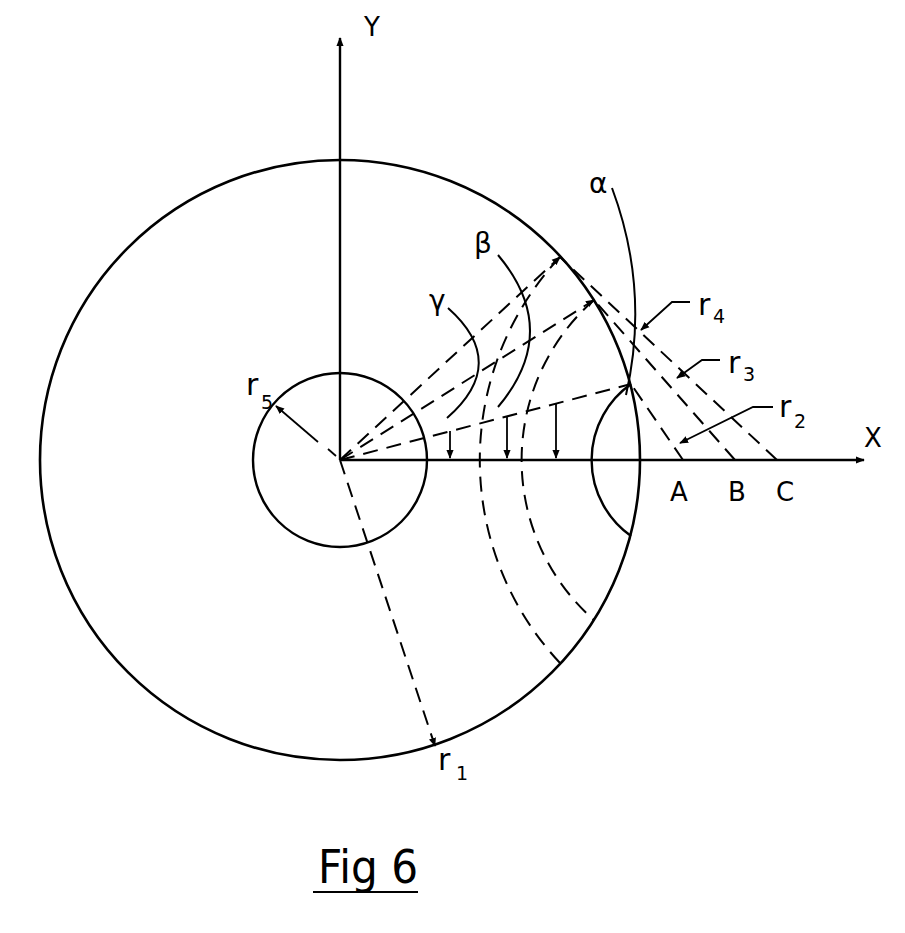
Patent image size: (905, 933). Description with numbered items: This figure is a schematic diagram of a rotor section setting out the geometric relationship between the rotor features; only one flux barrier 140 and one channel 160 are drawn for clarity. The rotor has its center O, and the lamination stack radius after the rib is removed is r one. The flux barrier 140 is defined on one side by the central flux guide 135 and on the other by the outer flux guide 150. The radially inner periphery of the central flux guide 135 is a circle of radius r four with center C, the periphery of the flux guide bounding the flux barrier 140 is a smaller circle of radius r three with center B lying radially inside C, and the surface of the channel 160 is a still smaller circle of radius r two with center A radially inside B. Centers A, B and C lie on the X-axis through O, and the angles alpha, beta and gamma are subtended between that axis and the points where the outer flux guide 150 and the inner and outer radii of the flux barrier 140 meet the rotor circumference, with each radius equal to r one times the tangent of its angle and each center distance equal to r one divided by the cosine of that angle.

The central flux guide 135 is at (522, 660).
The flux barrier 140 is at (570, 623).
The outer flux guide 150 is at (603, 567).
The channel 160 is at (622, 495).